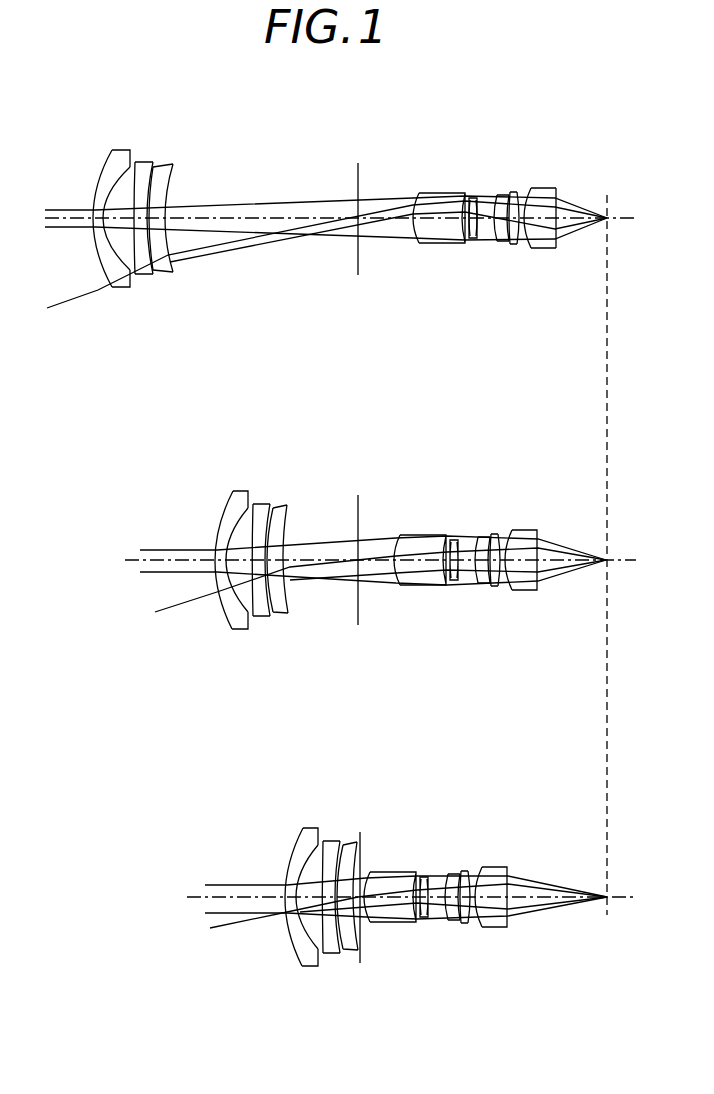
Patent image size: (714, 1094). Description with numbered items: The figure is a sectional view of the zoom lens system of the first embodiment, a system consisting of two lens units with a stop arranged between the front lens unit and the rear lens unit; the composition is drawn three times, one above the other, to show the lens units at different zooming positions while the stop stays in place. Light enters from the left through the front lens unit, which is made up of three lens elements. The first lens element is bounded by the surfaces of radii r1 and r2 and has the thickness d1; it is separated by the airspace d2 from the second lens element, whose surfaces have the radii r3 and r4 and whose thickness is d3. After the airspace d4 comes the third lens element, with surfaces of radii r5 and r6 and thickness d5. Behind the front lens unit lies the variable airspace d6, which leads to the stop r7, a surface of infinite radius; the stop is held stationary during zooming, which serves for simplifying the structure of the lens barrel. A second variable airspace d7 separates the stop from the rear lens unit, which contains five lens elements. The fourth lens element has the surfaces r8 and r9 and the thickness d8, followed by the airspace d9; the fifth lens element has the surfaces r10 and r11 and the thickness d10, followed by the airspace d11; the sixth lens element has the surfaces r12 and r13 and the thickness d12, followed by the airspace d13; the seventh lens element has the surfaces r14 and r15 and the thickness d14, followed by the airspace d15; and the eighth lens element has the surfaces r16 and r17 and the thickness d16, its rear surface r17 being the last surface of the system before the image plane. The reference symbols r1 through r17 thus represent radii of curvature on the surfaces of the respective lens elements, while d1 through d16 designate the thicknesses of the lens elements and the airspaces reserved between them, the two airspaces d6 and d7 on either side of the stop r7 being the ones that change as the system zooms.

The radius of curvature of first lens surface r1 is at (104, 160).
The radius of curvature of second lens surface r2 is at (121, 162).
The radius of curvature of third lens surface r3 is at (138, 162).
The radius of curvature of fourth lens surface r4 is at (151, 163).
The radius of curvature of fifth lens surface r5 is at (163, 164).
The radius of curvature of sixth lens surface r6 is at (175, 170).
The stop r7 is at (356, 165).
The radius of curvature of eighth lens surface r8 is at (412, 192).
The radius of curvature of ninth lens surface r9 is at (466, 195).
The radius of curvature of tenth lens surface r10 is at (470, 197).
The radius of curvature of eleventh lens surface r11 is at (479, 197).
The radius of curvature of twelfth lens surface r12 is at (488, 193).
The radius of curvature of thirteenth lens surface r13 is at (501, 195).
The radius of curvature of fourteenth lens surface r14 is at (516, 192).
The radius of curvature of fifteenth lens surface r15 is at (523, 193).
The radius of curvature of sixteenth lens surface r16 is at (543, 188).
The radius of curvature of seventeenth lens surface r17 is at (560, 190).
The thickness of first lens element d1 is at (100, 233).
The airspace between first and second lens elements d2 is at (118, 262).
The thickness of second lens element d3 is at (140, 274).
The airspace between second and third lens elements d4 is at (155, 265).
The thickness of third lens element d5 is at (168, 250).
The variable airspace between front lens unit and stop d6 is at (240, 222).
The variable airspace between stop and rear lens unit d7 is at (378, 243).
The thickness of fourth lens element d8 is at (414, 245).
The airspace between fourth and fifth lens elements d9 is at (443, 245).
The thickness of fifth lens element d10 is at (469, 240).
The airspace between fifth and sixth lens elements d11 is at (485, 243).
The thickness of sixth lens element d12 is at (501, 243).
The airspace between sixth and seventh lens elements d13 is at (509, 244).
The thickness of seventh lens element d14 is at (517, 246).
The airspace between seventh and eighth lens elements d15 is at (530, 247).
The thickness of eighth lens element d16 is at (558, 250).